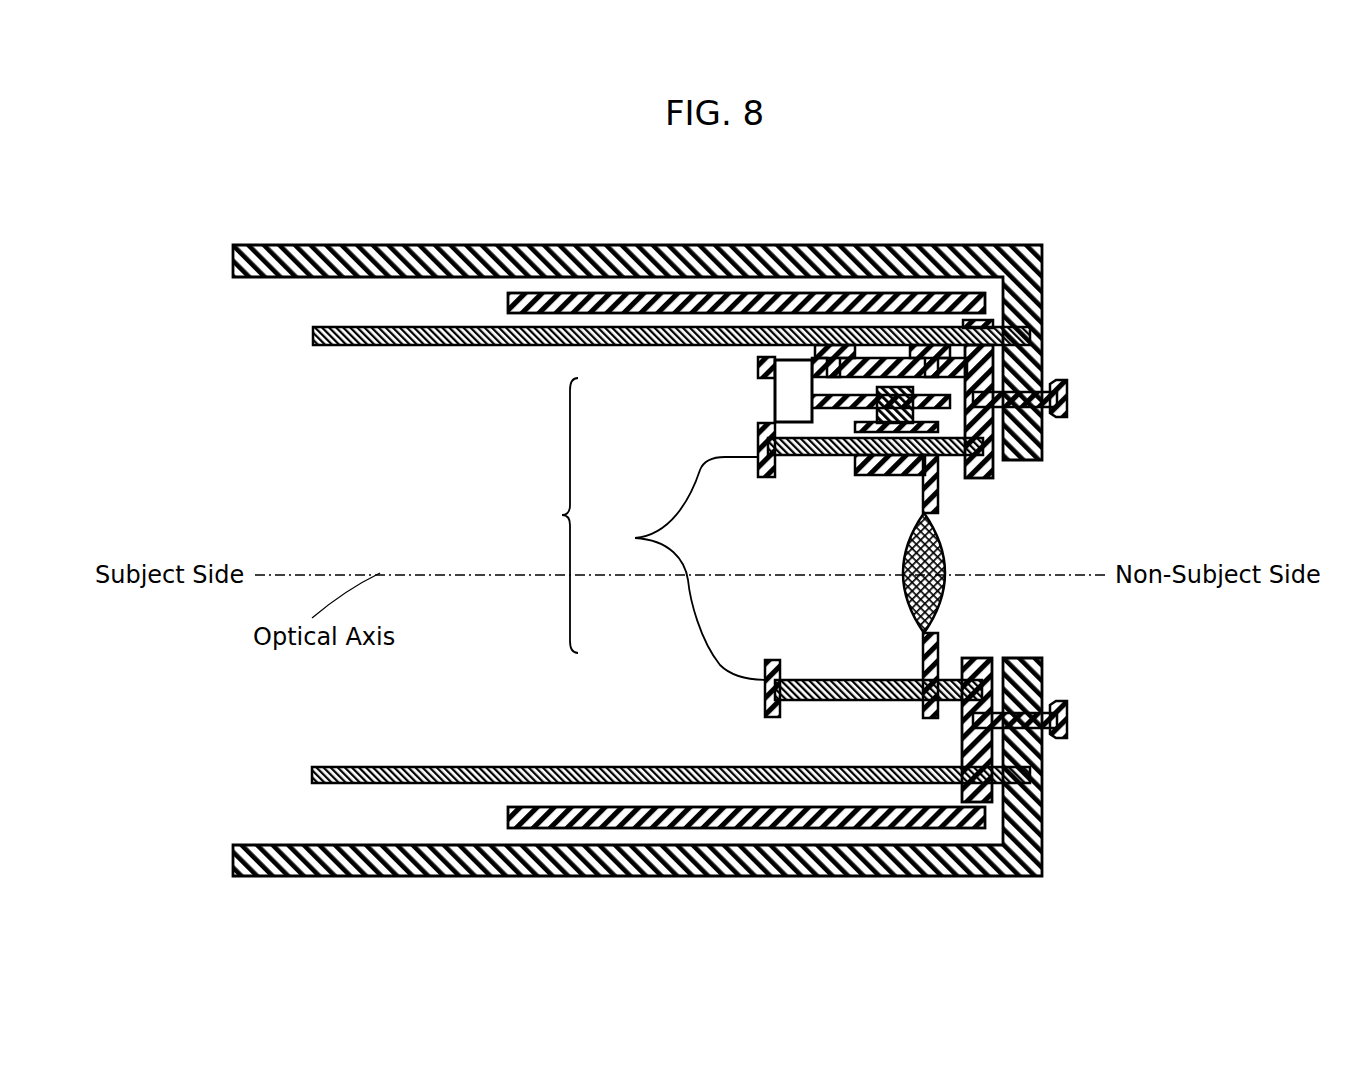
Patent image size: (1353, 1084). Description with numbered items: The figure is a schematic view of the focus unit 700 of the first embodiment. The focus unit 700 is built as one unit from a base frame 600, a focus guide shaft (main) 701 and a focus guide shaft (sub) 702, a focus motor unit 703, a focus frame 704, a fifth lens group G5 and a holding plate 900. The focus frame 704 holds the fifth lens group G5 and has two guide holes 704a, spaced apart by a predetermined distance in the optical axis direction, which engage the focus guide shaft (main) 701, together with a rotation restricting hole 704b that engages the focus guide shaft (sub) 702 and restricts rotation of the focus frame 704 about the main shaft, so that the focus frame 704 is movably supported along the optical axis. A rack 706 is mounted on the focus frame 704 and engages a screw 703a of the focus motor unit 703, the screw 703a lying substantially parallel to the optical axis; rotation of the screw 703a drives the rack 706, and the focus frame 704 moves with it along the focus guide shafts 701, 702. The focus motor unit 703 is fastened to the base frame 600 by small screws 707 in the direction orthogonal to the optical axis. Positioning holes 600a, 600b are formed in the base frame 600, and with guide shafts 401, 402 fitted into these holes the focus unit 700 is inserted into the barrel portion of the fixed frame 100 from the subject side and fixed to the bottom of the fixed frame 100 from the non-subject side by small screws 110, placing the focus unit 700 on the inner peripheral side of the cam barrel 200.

The fixed frame 100 is at (573, 247).
The cam barrel 200 is at (938, 295).
The guide shaft 401 is at (367, 767).
The guide shaft 402 is at (320, 327).
The base frame 600 is at (1040, 362).
The positioning hole 600a is at (983, 312).
The positioning hole 600b is at (963, 748).
The small screws 110 is at (1063, 397).
The focus unit 700 is at (544, 515).
The focus guide shaft (main) 701 is at (807, 455).
The focus guide shaft (sub) 702 is at (830, 682).
The focus motor unit 703 is at (777, 407).
The screw 703a is at (800, 357).
The focus frame 704 is at (938, 503).
The guide holes 704a is at (925, 472).
The rotation restricting hole 704b is at (925, 675).
The rack 706 is at (1032, 457).
The small screws 707 is at (925, 357).
The holding plate 900 is at (676, 568).
The fifth lens group G5 is at (942, 550).